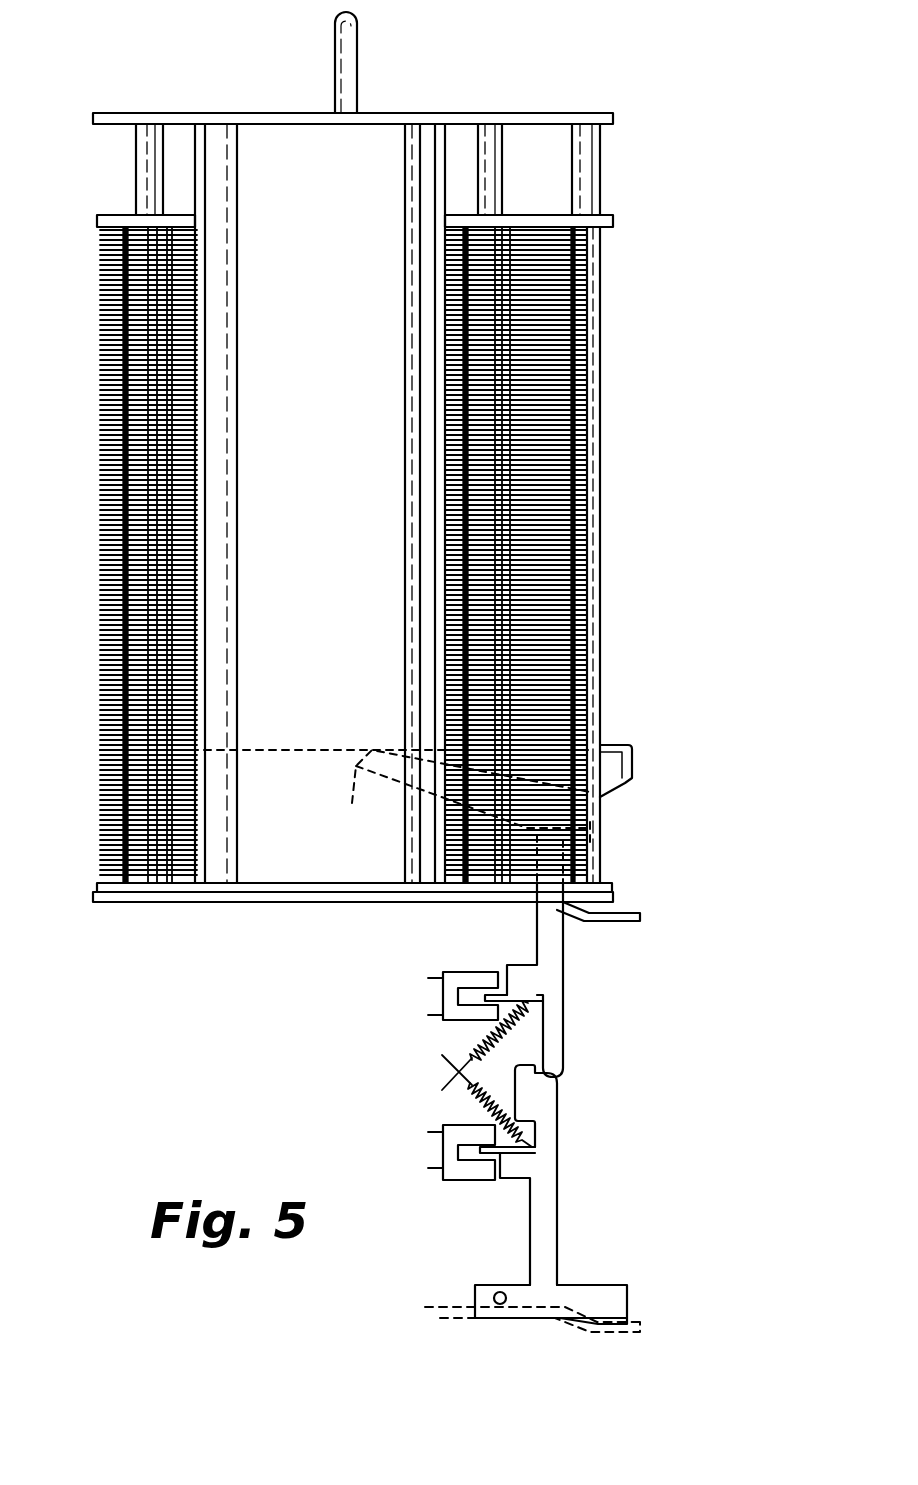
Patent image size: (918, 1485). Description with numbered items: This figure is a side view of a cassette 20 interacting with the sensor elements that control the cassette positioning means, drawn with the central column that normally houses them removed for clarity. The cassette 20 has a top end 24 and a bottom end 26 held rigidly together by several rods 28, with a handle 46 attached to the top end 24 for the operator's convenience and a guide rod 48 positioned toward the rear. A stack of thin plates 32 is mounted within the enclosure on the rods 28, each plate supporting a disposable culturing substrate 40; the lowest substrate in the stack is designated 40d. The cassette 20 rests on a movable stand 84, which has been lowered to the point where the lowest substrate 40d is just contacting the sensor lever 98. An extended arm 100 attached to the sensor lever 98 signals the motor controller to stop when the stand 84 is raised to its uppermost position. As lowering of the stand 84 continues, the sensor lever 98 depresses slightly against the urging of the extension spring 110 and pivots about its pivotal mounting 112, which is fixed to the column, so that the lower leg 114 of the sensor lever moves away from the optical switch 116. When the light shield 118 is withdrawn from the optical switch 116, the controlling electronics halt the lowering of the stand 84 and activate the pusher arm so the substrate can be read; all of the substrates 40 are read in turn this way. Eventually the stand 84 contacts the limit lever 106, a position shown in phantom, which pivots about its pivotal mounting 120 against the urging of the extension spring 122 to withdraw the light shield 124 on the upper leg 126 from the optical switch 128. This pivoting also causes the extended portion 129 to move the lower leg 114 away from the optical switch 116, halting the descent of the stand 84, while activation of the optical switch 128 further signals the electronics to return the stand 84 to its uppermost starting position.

The cassette 20 is at (528, 48).
The top end 24 is at (176, 112).
The bottom end 26 is at (95, 891).
The rods 28 is at (137, 165).
The plates 32 is at (100, 297).
The substrate 40 is at (298, 555).
The lowest substrate 40d is at (280, 749).
The handle 46 is at (359, 35).
The guide rod 48 is at (601, 145).
The stand 84 is at (620, 912).
The sensor lever 98 is at (463, 792).
The extended arm 100 is at (632, 748).
The limit lever 106 is at (617, 1320).
The extension spring 110 is at (480, 1050).
The pivotal mounting 112 is at (601, 833).
The lower leg 114 is at (560, 1035).
The optical switch 116 is at (452, 975).
The light shield 118 is at (520, 995).
The pivotal mounting 120 is at (500, 1292).
The extension spring 122 is at (472, 1090).
The light shield 124 is at (517, 1155).
The upper leg 126 is at (550, 1148).
The optical switch 128 is at (443, 1152).
The extended portion 129 is at (527, 1078).